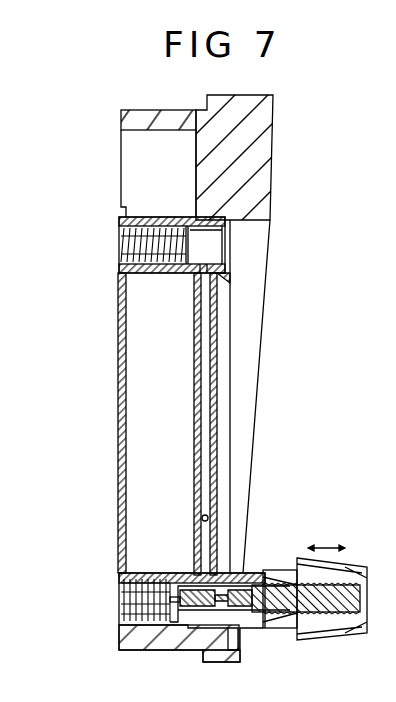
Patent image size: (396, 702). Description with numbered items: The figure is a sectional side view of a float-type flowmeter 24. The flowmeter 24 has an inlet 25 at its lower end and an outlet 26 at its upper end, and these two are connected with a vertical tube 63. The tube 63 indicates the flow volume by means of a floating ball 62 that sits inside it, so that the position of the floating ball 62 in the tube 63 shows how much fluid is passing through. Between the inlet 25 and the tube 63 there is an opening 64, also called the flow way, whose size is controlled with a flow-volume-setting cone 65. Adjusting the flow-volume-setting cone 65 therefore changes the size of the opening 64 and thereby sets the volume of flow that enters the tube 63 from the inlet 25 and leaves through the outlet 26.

The float-type flowmeter 24 is at (273, 221).
The inlet 25 is at (119, 610).
The outlet 26 is at (119, 250).
The floating ball 62 is at (202, 518).
The tube 63 is at (194, 446).
The opening 64 is at (181, 616).
The flow-volume-setting cone 65 is at (186, 590).